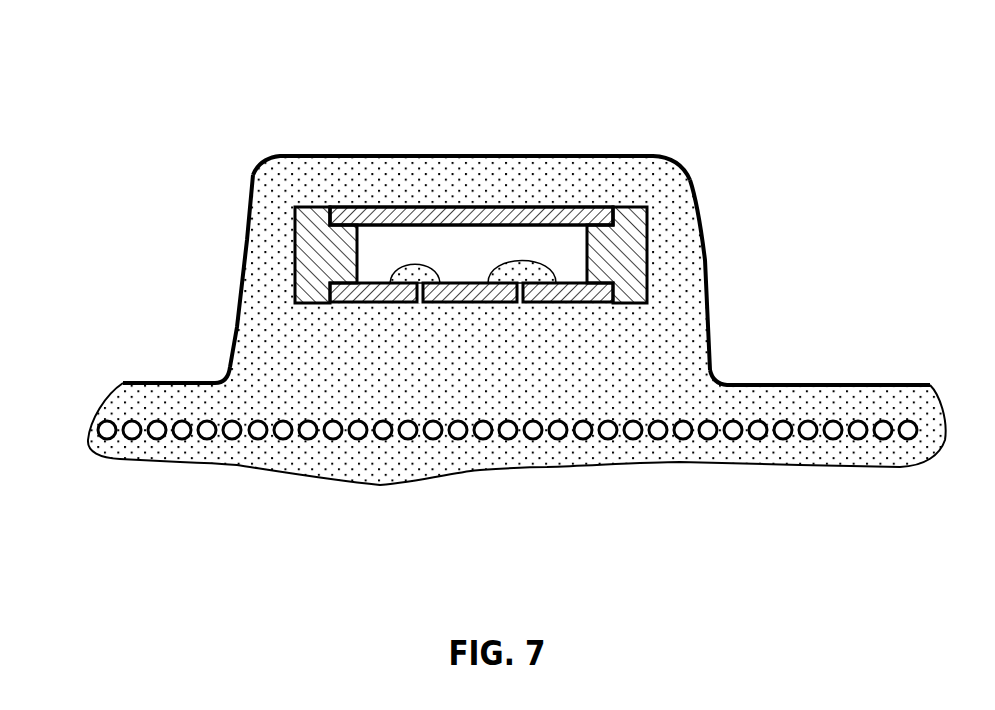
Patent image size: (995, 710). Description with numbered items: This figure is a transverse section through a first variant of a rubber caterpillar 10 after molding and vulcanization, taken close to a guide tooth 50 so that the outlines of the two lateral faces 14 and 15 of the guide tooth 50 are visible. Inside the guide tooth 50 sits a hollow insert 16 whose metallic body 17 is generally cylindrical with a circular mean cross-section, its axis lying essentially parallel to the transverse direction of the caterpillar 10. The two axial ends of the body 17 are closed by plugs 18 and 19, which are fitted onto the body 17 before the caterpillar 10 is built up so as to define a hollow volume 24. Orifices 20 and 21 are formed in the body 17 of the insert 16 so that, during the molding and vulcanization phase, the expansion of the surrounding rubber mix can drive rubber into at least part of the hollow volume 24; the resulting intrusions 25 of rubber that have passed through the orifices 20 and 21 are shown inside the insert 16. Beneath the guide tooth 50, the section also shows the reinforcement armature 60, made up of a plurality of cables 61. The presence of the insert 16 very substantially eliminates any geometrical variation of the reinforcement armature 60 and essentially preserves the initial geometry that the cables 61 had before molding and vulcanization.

The caterpillar 10 is at (517, 308).
The lateral face 14 is at (705, 260).
The lateral face 15 is at (237, 325).
The hollow insert 16 is at (560, 215).
The metallic body 17 is at (400, 210).
The plug 18 is at (322, 255).
The plug 19 is at (647, 217).
The orifice 20 is at (415, 272).
The orifice 21 is at (523, 303).
The hollow volume 24 is at (540, 245).
The intrusions of rubber 25 is at (425, 277).
The guide tooth 50 is at (475, 175).
The reinforcement armature 60 is at (683, 440).
The cables 61 is at (758, 440).